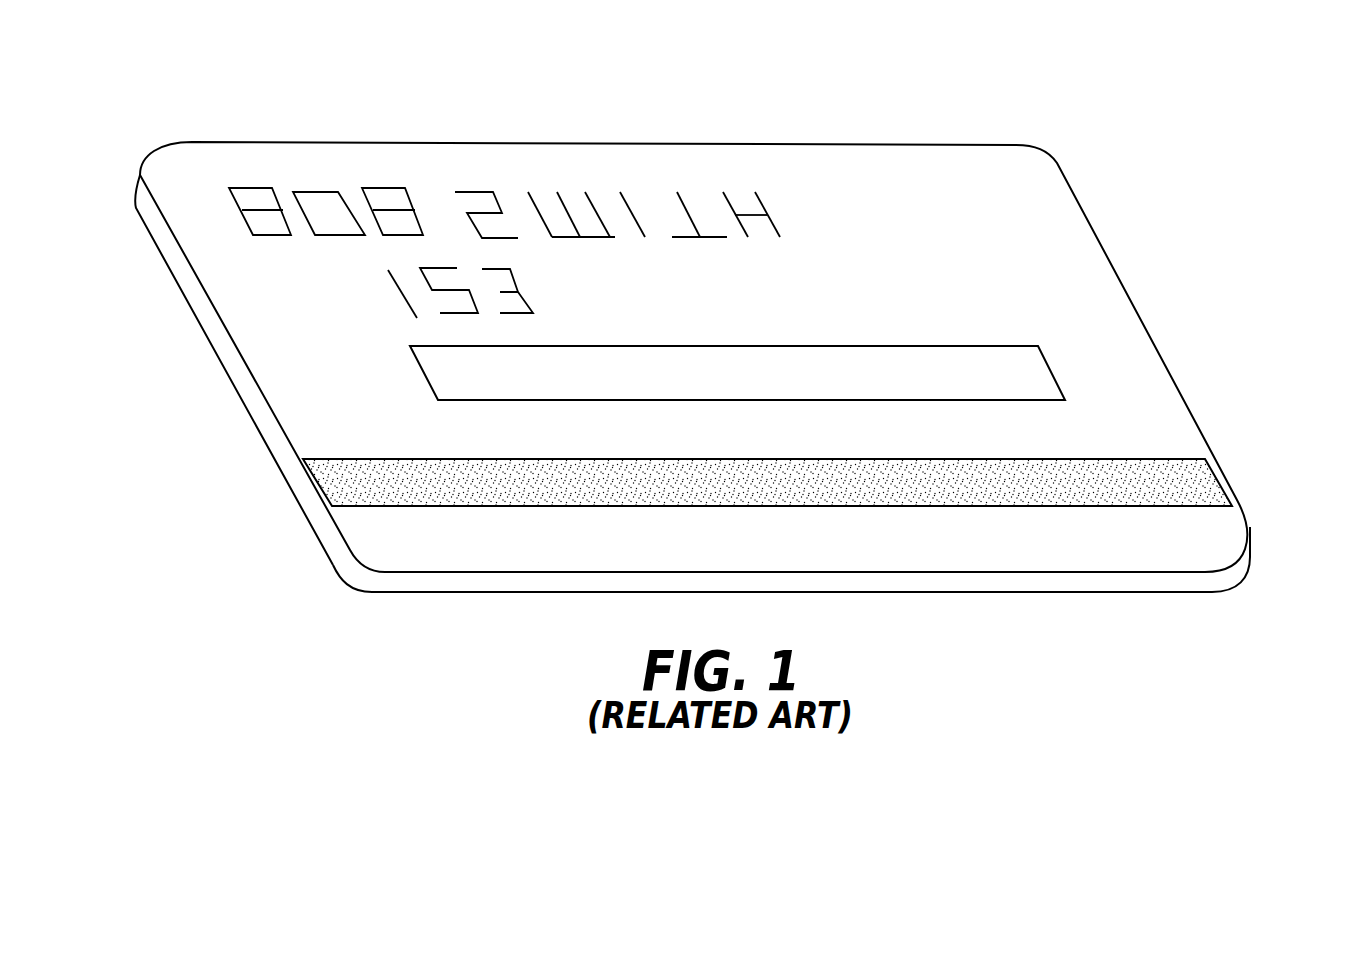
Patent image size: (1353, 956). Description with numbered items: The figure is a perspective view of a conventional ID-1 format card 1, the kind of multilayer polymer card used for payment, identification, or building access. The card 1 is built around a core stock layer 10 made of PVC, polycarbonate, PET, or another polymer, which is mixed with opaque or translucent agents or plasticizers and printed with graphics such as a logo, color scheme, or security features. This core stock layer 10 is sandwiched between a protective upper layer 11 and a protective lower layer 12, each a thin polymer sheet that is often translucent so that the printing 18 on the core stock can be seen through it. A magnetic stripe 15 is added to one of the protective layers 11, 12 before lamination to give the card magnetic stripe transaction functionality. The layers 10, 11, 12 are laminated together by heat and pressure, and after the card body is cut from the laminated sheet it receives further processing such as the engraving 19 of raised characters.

The ID-1 format card 1 is at (179, 39).
The core stock layer 10 is at (203, 312).
The protective upper layer 11 is at (178, 217).
The protective lower layer 12 is at (237, 395).
The magnetic stripe 15 is at (1193, 482).
The printing 18 is at (1021, 368).
The engraving 19 is at (537, 198).